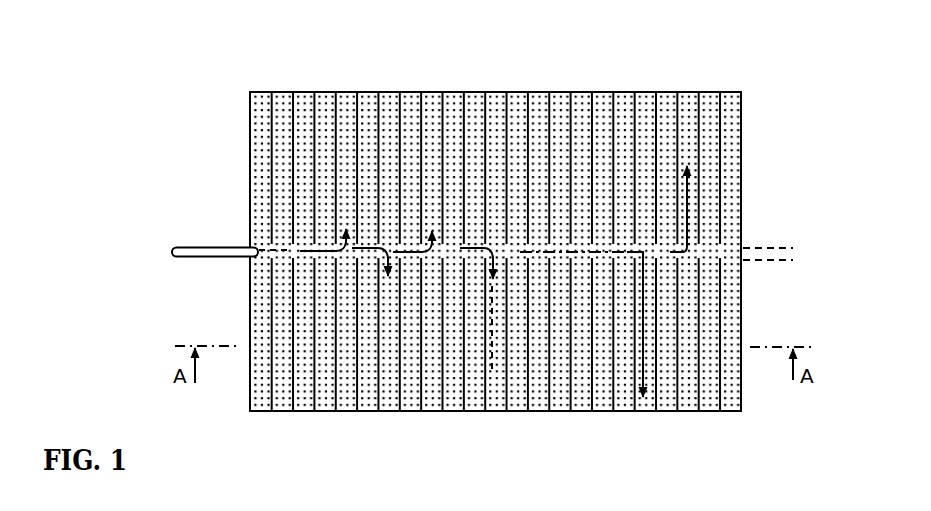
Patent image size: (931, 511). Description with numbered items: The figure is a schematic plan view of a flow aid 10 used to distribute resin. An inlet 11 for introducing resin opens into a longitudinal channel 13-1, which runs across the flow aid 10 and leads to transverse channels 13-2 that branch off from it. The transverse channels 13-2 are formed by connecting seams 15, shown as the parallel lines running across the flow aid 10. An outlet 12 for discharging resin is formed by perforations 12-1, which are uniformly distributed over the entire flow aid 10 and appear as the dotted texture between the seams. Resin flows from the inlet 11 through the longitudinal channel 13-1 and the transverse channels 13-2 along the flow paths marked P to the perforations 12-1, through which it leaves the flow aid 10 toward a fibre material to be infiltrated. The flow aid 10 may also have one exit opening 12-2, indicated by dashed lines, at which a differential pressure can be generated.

The flow aid 10 is at (484, 205).
The inlet 11 is at (213, 245).
The outlet 12 is at (733, 137).
The perforations 12-1 is at (583, 127).
The exit opening 12-2 is at (778, 247).
The longitudinal channel 13-1 is at (290, 247).
The transverse channels 13-2 is at (390, 155).
The connecting seams 15 is at (273, 128).